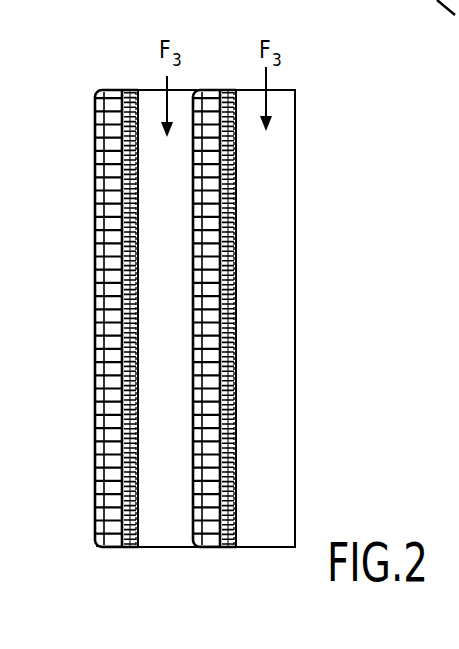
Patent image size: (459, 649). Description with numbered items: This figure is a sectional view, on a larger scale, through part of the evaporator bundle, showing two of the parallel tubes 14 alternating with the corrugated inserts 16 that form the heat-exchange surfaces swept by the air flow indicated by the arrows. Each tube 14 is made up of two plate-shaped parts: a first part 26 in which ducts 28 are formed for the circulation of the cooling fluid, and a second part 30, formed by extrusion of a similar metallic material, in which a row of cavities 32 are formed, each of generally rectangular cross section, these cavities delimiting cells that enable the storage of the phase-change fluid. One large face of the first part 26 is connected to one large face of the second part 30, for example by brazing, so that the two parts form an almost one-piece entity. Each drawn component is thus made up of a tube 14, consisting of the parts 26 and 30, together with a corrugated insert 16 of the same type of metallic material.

The tube 14 is at (137, 307).
The corrugated insert 16 is at (166, 549).
The first part 26 is at (130, 84).
The ducts 28 is at (137, 296).
The second part 30 is at (94, 86).
The cavities 32 is at (95, 259).